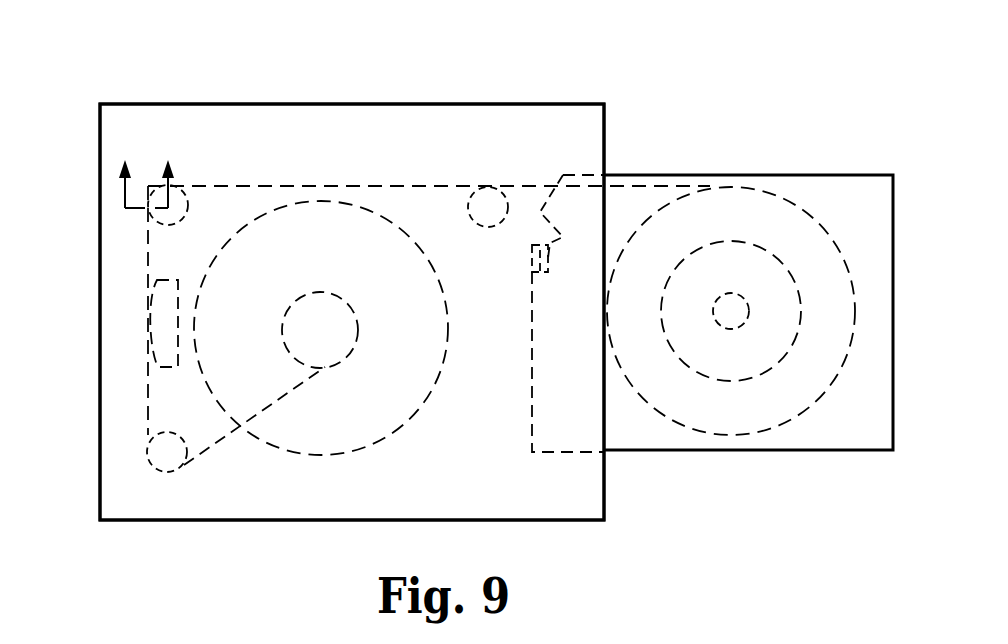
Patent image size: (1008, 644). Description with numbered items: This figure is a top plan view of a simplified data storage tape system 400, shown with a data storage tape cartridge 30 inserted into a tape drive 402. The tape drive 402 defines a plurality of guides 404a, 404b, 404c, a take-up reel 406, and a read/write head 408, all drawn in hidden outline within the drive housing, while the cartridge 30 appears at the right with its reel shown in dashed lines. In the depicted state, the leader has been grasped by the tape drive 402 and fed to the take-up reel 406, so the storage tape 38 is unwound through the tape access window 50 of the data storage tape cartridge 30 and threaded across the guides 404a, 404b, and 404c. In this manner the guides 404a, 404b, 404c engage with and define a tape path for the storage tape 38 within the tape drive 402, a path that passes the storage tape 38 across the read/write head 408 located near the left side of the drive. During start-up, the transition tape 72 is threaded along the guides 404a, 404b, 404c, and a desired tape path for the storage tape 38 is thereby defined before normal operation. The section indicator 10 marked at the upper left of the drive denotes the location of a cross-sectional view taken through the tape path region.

The data storage tape system 400 is at (453, 84).
The tape drive 402 is at (532, 528).
The data storage tape cartridge 30 is at (832, 168).
The storage tape 38 is at (394, 180).
The transition tape 72 is at (258, 186).
The guide 404a is at (488, 228).
The guide 404b is at (160, 224).
The guide 404c is at (169, 472).
The take-up reel 406 is at (418, 408).
The read/write head 408 is at (152, 282).
The tape access window 50 is at (549, 200).
The section line 10- 10 is at (154, 166).